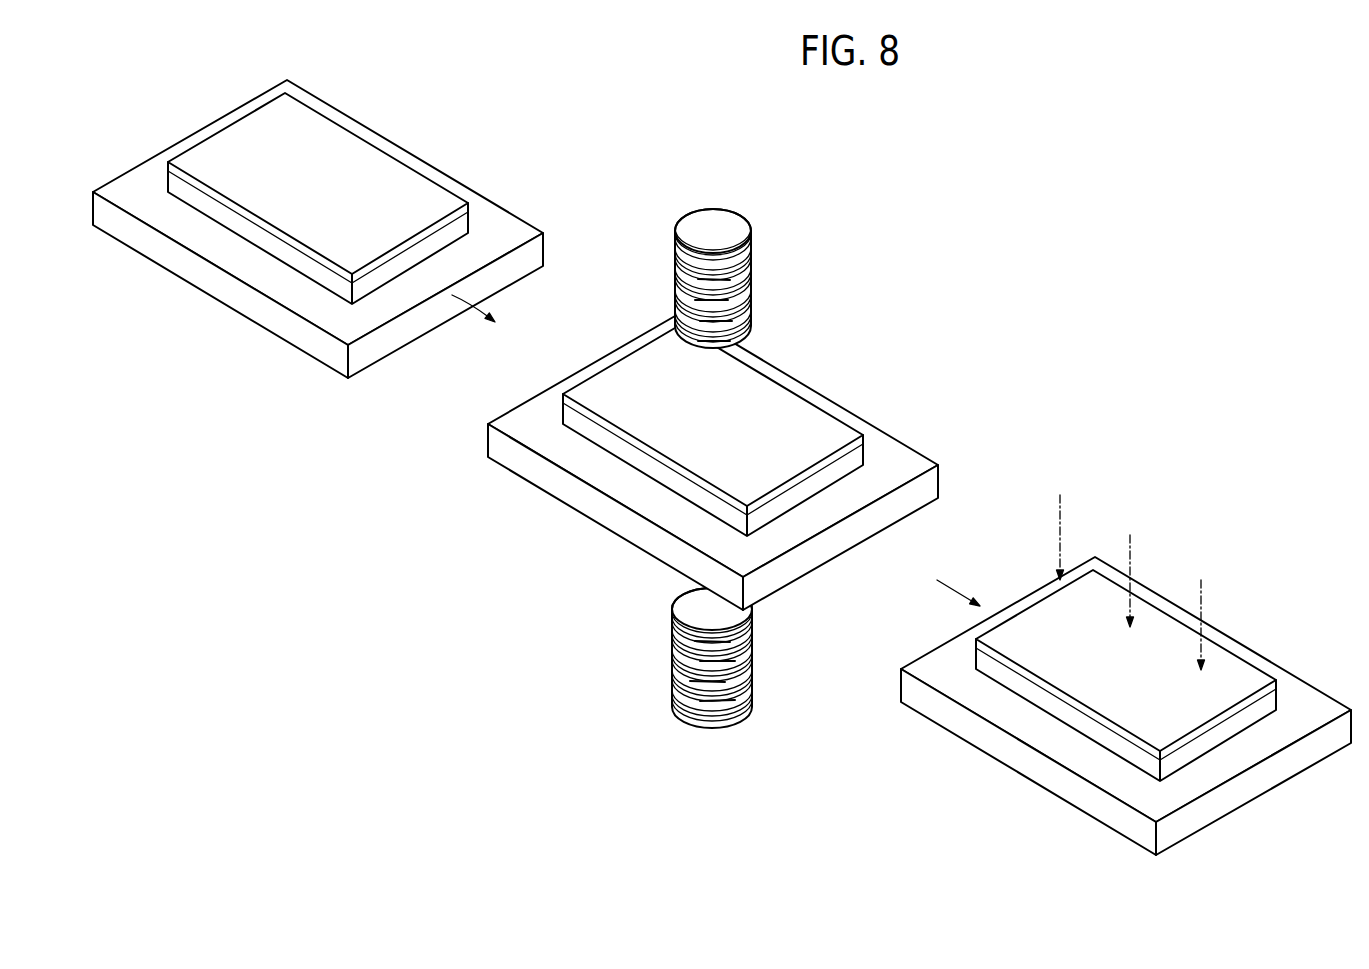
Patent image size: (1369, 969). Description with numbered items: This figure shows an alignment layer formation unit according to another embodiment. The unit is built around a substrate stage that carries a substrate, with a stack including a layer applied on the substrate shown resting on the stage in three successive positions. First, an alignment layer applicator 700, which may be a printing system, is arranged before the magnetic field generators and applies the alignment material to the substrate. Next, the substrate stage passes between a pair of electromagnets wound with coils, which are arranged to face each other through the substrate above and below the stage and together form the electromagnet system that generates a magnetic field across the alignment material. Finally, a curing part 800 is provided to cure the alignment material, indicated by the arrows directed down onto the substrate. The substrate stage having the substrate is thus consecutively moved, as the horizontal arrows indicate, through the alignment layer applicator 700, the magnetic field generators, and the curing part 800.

The alignment layer applicator 700 is at (262, 386).
The curing part 800 is at (1166, 562).